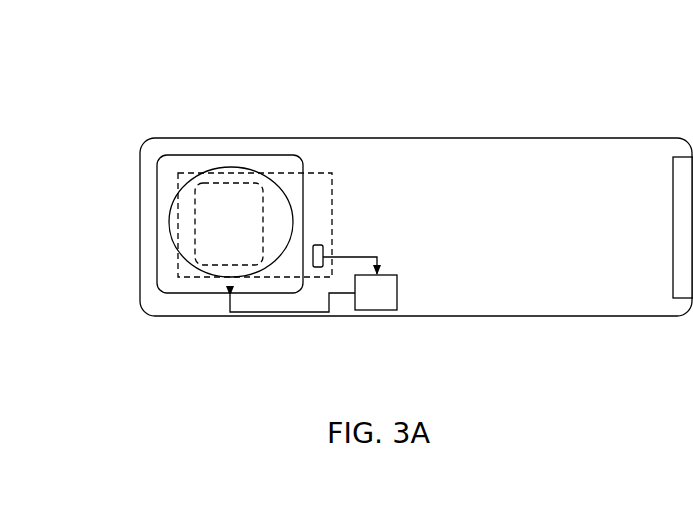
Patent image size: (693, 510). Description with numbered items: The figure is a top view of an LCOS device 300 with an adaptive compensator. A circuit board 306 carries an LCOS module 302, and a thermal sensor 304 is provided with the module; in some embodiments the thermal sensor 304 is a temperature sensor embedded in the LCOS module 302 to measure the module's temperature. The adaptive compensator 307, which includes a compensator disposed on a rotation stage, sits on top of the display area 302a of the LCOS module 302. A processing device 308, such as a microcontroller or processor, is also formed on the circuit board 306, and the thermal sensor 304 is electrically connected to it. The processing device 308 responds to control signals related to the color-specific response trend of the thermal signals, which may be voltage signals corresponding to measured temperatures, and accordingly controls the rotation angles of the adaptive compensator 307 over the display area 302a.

The LCOS device 300 is at (432, 47).
The LCOS module 302 is at (336, 187).
The display area 302a is at (219, 222).
The thermal sensor 304 is at (318, 272).
The circuit board 306 is at (550, 165).
The adaptive compensator 307 is at (230, 154).
The processing device 308 is at (373, 303).